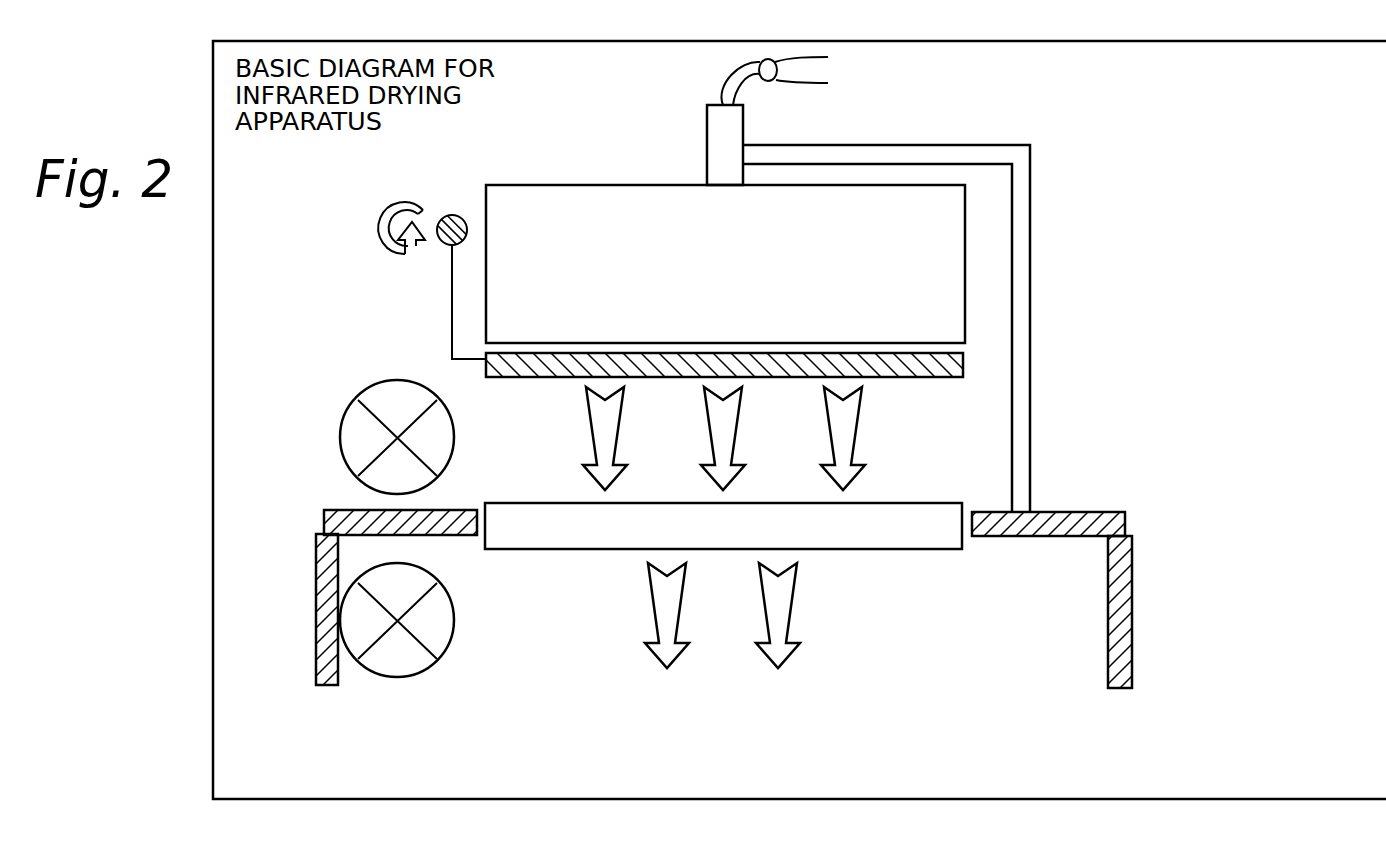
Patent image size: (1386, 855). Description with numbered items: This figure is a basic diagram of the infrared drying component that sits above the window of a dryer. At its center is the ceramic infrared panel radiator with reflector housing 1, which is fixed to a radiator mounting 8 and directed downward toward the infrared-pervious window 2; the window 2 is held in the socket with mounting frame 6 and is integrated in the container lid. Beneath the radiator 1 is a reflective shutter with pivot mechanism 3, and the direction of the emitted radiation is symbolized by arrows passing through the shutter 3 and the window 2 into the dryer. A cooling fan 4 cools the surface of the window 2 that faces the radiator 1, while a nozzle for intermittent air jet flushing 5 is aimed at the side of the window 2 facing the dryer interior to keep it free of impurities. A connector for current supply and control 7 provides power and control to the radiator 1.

The infrared radiator with reflector housing 1 is at (968, 257).
The infrared-pervious window 2 is at (905, 557).
The reflective shutter with pivot mechanism 3 is at (966, 360).
The cooling fan 4 is at (455, 445).
The nozzle for intermittent air jet flushing 5 is at (405, 676).
The socket with mounting frame 6 is at (1125, 520).
The connector for current supply and control 7 is at (758, 127).
The radiator mounting 8 is at (1042, 178).